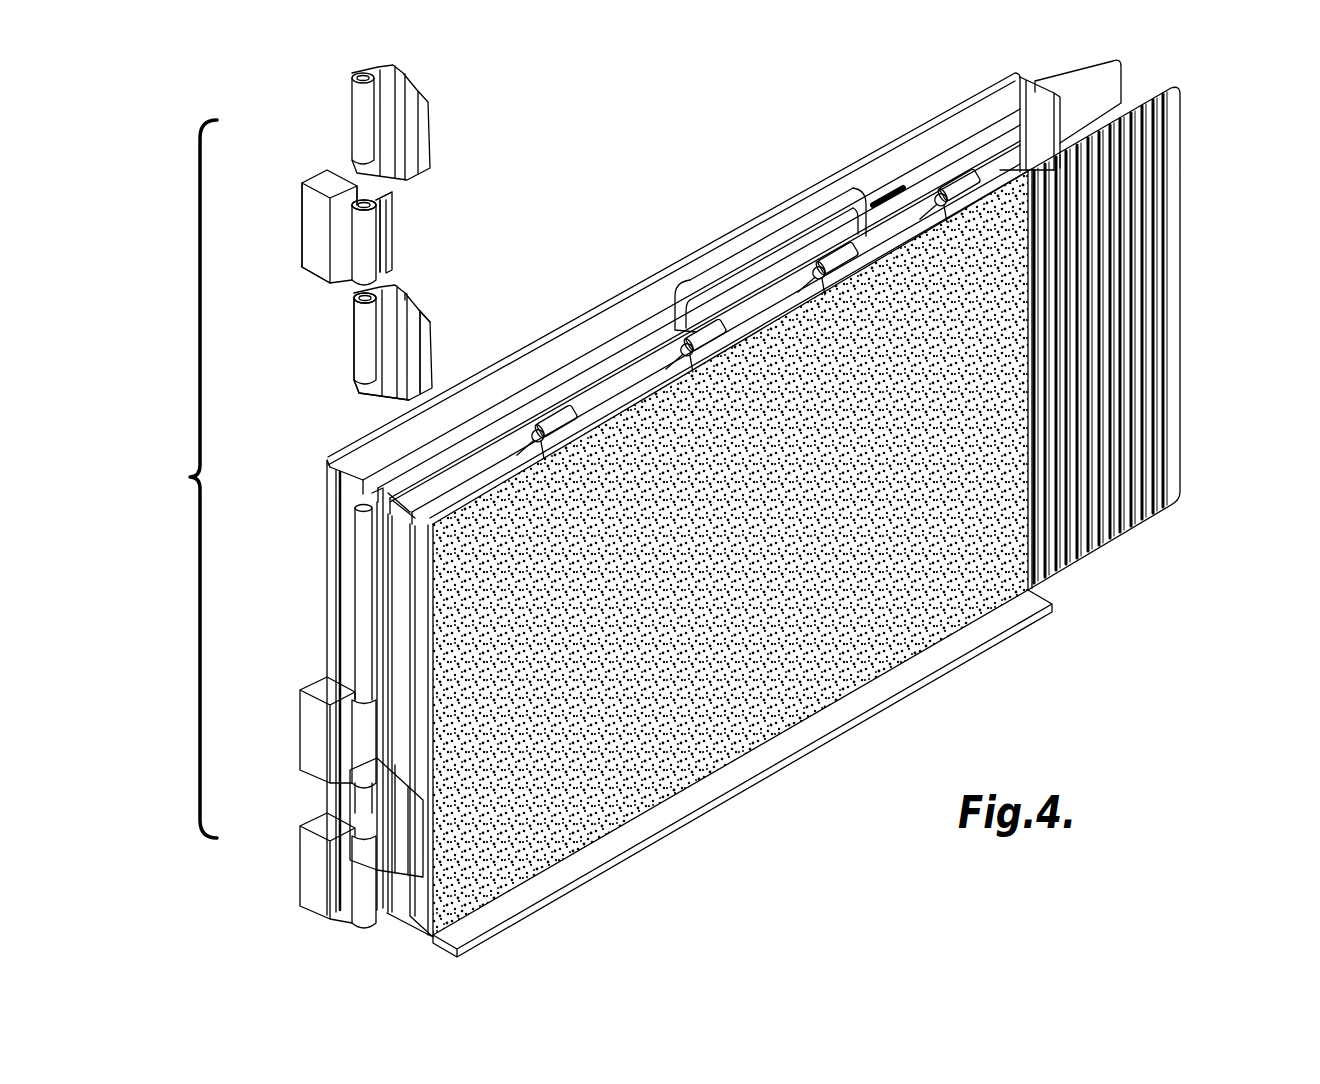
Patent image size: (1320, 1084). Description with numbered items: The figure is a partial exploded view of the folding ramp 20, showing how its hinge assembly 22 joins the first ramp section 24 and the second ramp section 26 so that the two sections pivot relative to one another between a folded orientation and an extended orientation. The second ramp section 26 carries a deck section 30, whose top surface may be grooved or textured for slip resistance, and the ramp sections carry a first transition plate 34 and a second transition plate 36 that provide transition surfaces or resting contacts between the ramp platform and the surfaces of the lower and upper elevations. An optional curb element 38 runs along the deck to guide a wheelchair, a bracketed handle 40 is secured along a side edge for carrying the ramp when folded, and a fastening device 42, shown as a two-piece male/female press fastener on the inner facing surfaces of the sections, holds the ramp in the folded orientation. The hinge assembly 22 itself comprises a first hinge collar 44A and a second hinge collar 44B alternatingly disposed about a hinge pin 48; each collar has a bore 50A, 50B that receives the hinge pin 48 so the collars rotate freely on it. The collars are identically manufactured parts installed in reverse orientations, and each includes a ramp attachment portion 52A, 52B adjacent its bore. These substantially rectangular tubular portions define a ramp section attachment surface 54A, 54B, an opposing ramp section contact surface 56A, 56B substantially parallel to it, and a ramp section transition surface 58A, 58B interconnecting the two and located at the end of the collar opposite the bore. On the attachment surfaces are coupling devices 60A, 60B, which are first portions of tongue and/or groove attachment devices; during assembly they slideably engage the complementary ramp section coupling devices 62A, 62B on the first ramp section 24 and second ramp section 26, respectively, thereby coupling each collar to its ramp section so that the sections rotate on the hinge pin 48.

The folding ramp 20 is at (713, 218).
The hinge assembly 22 is at (184, 479).
The first ramp section 24 is at (853, 180).
The second ramp section 26 is at (993, 163).
The deck section 30 is at (745, 683).
The first transition plate 34 is at (1123, 82).
The second transition plate 36 is at (1172, 265).
The curb element 38 is at (975, 660).
The bracketed handle 40 is at (797, 230).
The fastening device 42 is at (897, 190).
The first hinge collar 44A is at (297, 213).
The second hinge collar 44B is at (447, 112).
The hinge pin 48 is at (363, 535).
The bore of first hinge collar 50A is at (370, 205).
The bore of second hinge collar 50B is at (350, 297).
The ramp attachment portion of first hinge collar 52A is at (297, 198).
The ramp attachment portion of second hinge collar 52B is at (377, 393).
The ramp section attachment surface of first hinge collar 54A is at (357, 187).
The ramp section attachment surface of second hinge collar 54B is at (407, 303).
The opposing ramp section contact surface of first hinge collar 56A is at (340, 240).
The opposing ramp section contact surface of second hinge collar 56B is at (373, 347).
The ramp section transition surface of first hinge collar 58A is at (308, 177).
The ramp section transition surface of second hinge collar 58B is at (423, 380).
The coupling device of first hinge collar 60A is at (345, 173).
The coupling device of second hinge collar 60B is at (423, 313).
The ramp section coupling device of first ramp section 62A is at (413, 737).
The ramp section coupling device of second ramp section 62B is at (337, 600).